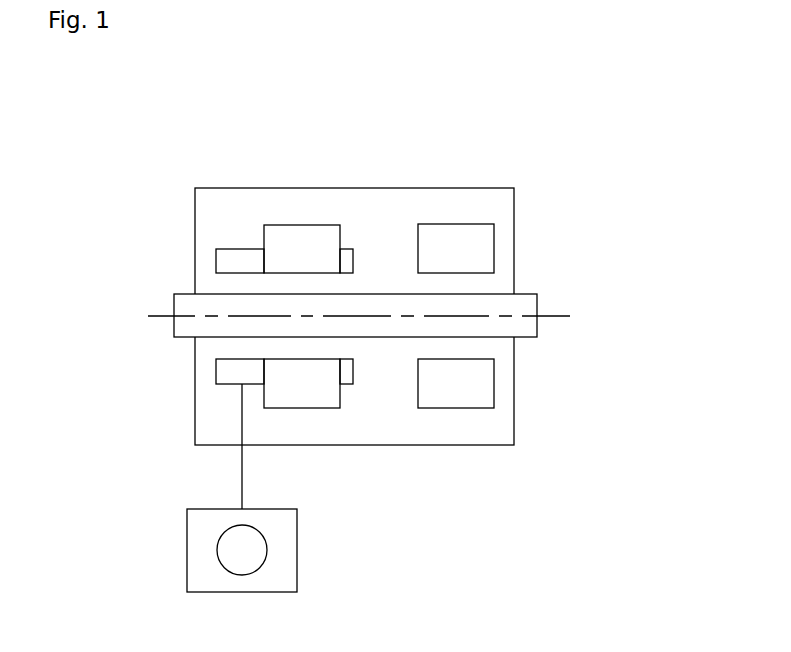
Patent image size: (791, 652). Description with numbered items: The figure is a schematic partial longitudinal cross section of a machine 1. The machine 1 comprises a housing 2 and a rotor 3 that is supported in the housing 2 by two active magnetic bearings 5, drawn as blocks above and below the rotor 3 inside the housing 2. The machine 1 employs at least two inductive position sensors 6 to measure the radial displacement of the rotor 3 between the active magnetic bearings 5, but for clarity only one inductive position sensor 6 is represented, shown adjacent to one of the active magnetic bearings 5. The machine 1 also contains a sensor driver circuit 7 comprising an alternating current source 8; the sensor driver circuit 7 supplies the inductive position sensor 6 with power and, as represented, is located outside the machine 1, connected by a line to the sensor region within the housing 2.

The machine 1 is at (484, 141).
The housing 2 is at (373, 187).
The rotor 3 is at (174, 297).
The active magnetic bearings 5 is at (379, 248).
The inductive position sensor 6 is at (216, 261).
The sensor driver circuit 7 is at (187, 549).
The alternating current source 8 is at (242, 550).